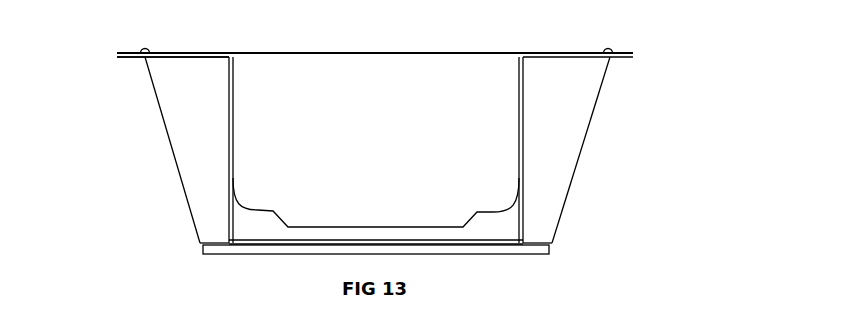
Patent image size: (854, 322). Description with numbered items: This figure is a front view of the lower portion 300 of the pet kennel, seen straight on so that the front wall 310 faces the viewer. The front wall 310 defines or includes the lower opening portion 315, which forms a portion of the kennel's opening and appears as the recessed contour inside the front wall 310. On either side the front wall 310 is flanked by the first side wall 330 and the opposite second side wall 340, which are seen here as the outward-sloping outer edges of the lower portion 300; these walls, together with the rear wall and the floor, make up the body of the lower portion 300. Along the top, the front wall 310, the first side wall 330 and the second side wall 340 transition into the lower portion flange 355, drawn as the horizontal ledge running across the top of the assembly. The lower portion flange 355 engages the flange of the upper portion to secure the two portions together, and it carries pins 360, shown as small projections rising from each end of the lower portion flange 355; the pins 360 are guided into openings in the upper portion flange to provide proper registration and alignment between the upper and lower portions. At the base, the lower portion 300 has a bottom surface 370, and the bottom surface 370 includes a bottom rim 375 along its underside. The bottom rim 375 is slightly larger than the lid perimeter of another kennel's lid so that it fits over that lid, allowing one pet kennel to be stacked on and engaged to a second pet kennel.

The lower portion 300 is at (658, 191).
The front wall 310 is at (198, 170).
The lower opening portion 315 is at (332, 177).
The first side wall 330 is at (588, 128).
The second side wall 340 is at (160, 127).
The lower portion flange 355 is at (125, 58).
The pins 360 is at (140, 49).
The bottom surface 370 is at (227, 254).
The bottom rim 375 is at (517, 249).